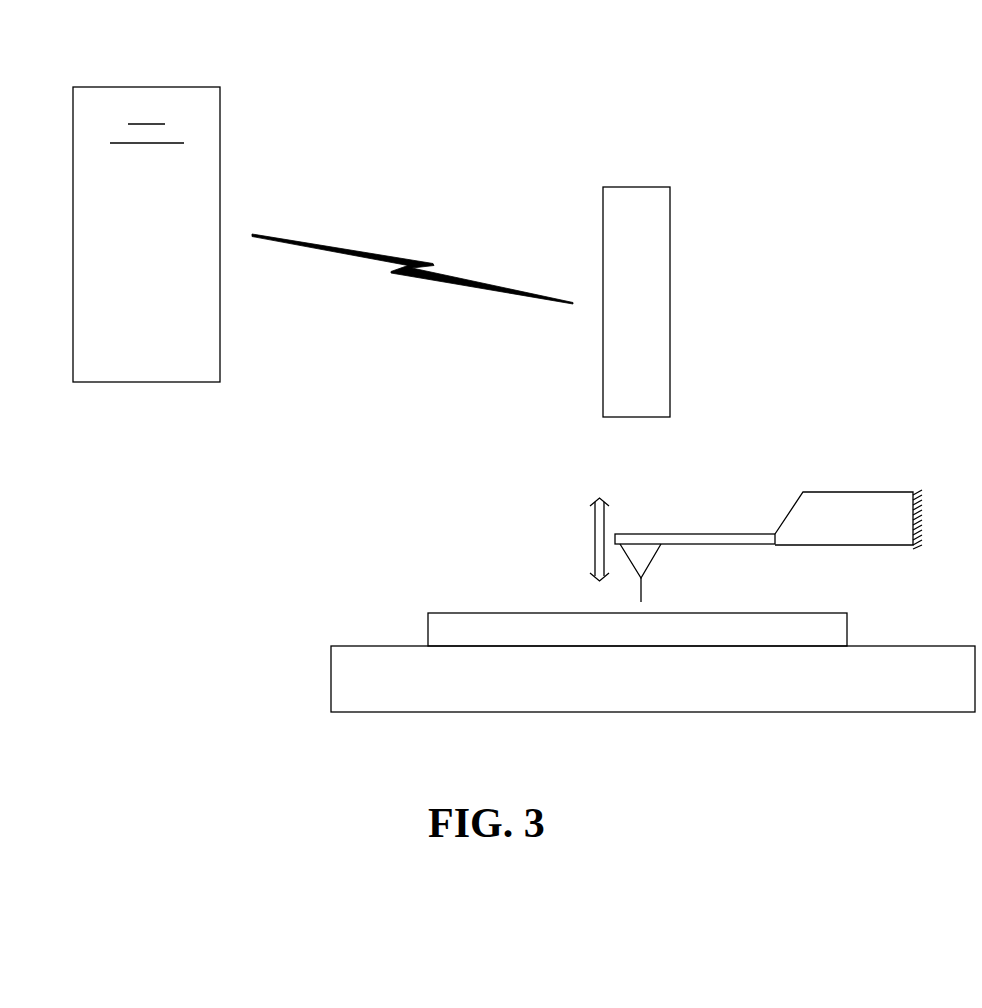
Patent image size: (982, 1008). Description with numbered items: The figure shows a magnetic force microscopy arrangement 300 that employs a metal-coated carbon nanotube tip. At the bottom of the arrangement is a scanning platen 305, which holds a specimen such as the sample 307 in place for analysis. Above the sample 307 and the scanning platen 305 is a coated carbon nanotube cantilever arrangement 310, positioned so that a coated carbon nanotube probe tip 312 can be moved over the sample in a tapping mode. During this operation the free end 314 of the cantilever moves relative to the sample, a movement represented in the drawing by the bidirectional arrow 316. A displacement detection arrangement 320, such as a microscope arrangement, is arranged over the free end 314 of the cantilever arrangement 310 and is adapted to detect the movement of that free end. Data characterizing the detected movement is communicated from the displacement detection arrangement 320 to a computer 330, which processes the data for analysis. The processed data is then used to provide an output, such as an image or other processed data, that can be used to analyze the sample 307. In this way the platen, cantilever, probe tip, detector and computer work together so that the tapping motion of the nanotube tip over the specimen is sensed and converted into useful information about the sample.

The magnetic force microscopy arrangement 300 is at (814, 26).
The scanning platen 305 is at (331, 680).
The sample 307 is at (428, 632).
The coated carbon nanotube cantilever arrangement 310 is at (737, 516).
The coated carbon nanotube probe tip 312 is at (641, 598).
The free end 314 is at (622, 534).
The bidirectional arrow 316 is at (594, 530).
The displacement detection arrangement 320 is at (653, 187).
The computer 330 is at (188, 87).